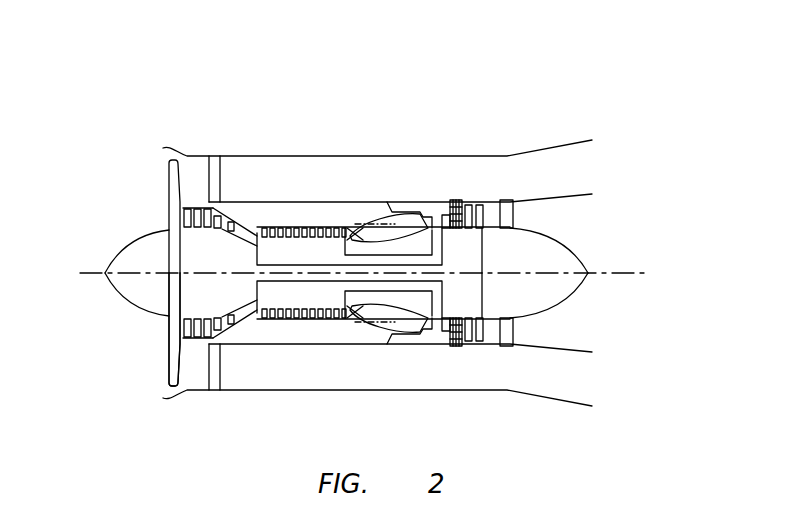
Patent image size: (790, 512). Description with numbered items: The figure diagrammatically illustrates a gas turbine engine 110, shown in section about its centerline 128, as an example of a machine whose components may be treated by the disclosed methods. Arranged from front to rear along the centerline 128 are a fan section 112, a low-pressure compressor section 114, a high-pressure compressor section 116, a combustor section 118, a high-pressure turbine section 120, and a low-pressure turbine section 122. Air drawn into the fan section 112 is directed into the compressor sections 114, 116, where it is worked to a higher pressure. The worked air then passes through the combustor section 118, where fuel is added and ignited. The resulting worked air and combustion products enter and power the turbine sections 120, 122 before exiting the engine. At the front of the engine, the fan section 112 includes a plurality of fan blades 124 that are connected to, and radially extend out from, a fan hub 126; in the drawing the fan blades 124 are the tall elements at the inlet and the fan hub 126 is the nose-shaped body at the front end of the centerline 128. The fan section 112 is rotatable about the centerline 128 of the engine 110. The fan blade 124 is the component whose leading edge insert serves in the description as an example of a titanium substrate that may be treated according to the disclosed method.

The gas turbine engine 110 is at (546, 113).
The fan section 112 is at (164, 218).
The low-pressure compressor section 114 is at (193, 193).
The high-pressure compressor section 116 is at (286, 221).
The combustor section 118 is at (386, 203).
The high-pressure turbine section 120 is at (423, 208).
The low-pressure turbine section 122 is at (451, 196).
The fan blade 124 is at (168, 363).
The fan hub 126 is at (169, 303).
The centerline 128 is at (640, 272).